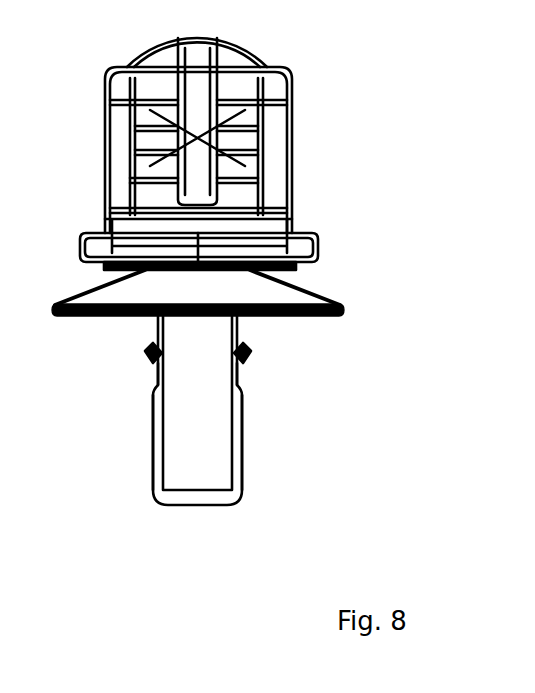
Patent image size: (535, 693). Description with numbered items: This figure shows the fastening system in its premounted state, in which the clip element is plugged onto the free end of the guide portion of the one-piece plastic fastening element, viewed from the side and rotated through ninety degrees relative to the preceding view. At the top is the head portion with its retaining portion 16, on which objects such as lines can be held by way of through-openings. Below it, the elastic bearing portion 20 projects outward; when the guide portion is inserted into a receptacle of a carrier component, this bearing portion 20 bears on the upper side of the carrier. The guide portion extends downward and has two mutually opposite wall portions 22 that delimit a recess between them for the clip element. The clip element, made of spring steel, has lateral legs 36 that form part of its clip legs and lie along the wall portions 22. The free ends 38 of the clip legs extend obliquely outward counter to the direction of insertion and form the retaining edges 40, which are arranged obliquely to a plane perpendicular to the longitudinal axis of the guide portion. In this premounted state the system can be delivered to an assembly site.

The retaining portion 16 is at (282, 74).
The bearing portion 20 is at (293, 295).
The wall portions 22 is at (230, 457).
The lateral legs 36 is at (150, 415).
The free ends 38 is at (147, 367).
The retaining edges 40 is at (146, 352).